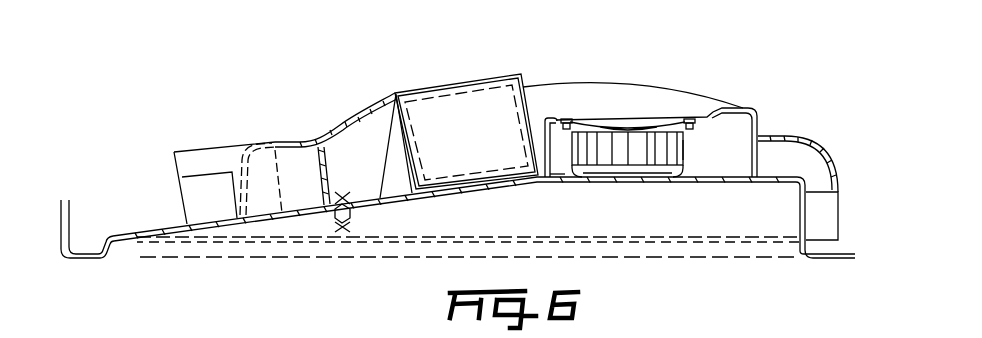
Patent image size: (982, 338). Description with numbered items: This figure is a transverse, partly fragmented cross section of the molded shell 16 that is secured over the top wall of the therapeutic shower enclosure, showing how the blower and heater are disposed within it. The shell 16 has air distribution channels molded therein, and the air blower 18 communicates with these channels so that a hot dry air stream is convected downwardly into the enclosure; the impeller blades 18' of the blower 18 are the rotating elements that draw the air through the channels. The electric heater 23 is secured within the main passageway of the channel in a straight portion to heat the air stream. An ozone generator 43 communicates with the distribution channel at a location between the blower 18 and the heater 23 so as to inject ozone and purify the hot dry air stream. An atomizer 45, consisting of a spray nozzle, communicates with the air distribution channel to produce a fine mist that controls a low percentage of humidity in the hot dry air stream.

The molded shell 16 is at (331, 131).
The electric heater 23 is at (432, 108).
The air blower 18 is at (651, 111).
The impeller blades 18' is at (711, 183).
The ozone generator 43 is at (818, 191).
The atomizer 45 is at (331, 219).